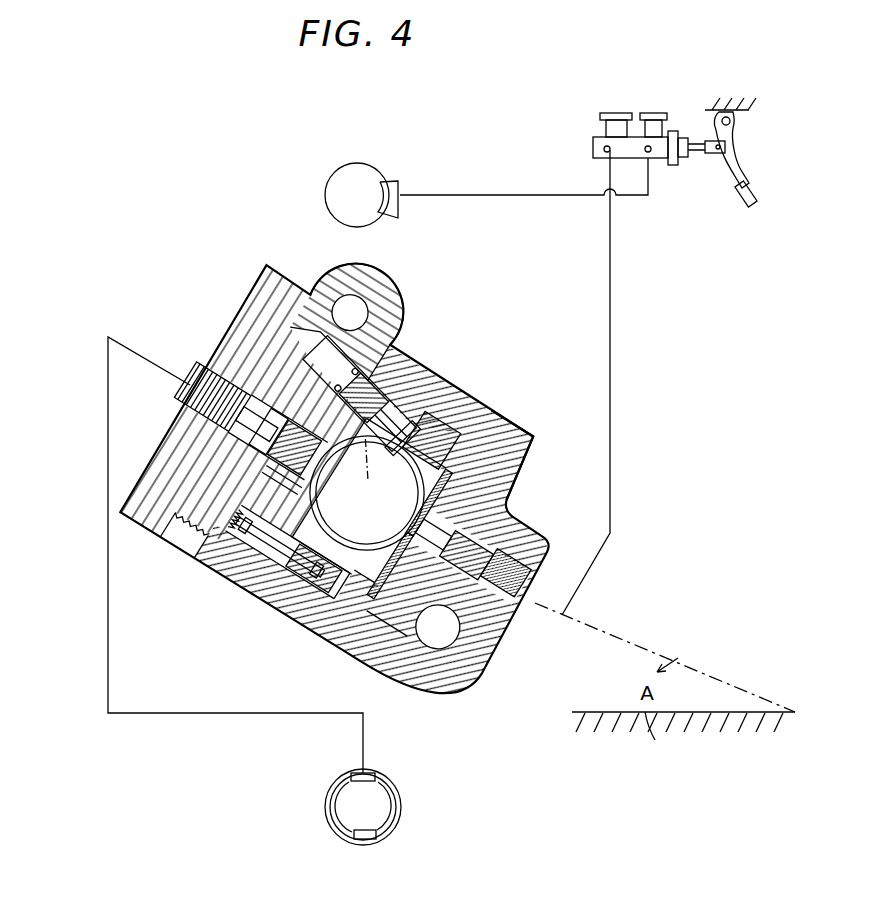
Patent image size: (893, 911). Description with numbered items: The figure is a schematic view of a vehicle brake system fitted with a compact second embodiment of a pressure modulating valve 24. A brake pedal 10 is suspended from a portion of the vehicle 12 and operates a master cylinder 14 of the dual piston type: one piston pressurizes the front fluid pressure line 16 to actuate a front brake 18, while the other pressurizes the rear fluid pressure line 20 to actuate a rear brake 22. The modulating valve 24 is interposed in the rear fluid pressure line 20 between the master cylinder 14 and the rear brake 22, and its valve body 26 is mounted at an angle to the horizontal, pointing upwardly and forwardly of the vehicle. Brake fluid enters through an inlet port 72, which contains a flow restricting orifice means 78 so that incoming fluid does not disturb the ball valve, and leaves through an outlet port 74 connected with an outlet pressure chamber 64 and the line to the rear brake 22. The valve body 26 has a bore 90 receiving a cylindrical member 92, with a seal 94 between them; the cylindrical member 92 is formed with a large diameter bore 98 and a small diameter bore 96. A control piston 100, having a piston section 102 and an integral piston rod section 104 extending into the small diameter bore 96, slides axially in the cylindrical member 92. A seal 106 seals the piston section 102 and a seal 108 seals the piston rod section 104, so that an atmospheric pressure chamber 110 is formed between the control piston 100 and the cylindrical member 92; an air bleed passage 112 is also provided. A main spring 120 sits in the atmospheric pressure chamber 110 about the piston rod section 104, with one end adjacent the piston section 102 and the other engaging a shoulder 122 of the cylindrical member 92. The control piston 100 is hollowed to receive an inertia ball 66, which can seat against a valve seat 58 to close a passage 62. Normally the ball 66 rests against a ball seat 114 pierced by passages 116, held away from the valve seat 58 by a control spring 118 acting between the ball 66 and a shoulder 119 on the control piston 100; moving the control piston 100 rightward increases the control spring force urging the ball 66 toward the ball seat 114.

The brake pedal 10 is at (749, 184).
The portion of the vehicle 12 is at (735, 103).
The master cylinder 14 is at (600, 137).
The front fluid pressure line 16 is at (636, 197).
The front brake 18 is at (402, 190).
The rear fluid pressure line 20 is at (612, 363).
The rear brake 22 is at (378, 774).
The pressure modulating valve 24 is at (237, 293).
The valve body 26 is at (493, 648).
The valve seat 58 is at (283, 405).
The passage 62 is at (263, 405).
The outlet pressure chamber 64 is at (252, 480).
The inertia ball 66 is at (366, 492).
The inlet port 72 is at (517, 592).
The outlet port 74 is at (193, 397).
The flow restricting orifice means 78 is at (467, 543).
The bore 90 is at (296, 590).
The cylindrical member 92 is at (318, 612).
The seal 94 is at (490, 407).
The small diameter bore 96 is at (410, 622).
The large diameter bore 98 is at (255, 560).
The control piston 100 is at (387, 383).
The piston section 102 is at (198, 555).
The piston rod section 104 is at (300, 573).
The seal 106 is at (202, 557).
The seal 108 is at (403, 417).
The atmospheric pressure chamber 110 is at (345, 360).
The air bleed passage 112 is at (423, 363).
The ball seat 114 is at (468, 450).
The passages 116 is at (460, 485).
The control spring 118 is at (360, 440).
The shoulder 119 is at (305, 500).
The main spring 120 is at (388, 336).
The shoulder 122 is at (402, 384).